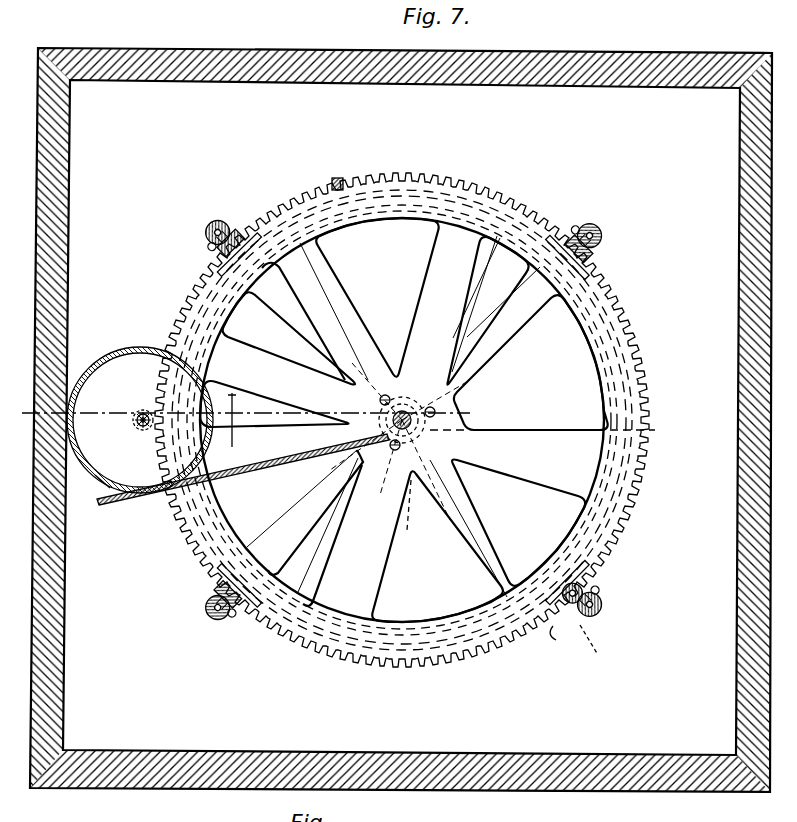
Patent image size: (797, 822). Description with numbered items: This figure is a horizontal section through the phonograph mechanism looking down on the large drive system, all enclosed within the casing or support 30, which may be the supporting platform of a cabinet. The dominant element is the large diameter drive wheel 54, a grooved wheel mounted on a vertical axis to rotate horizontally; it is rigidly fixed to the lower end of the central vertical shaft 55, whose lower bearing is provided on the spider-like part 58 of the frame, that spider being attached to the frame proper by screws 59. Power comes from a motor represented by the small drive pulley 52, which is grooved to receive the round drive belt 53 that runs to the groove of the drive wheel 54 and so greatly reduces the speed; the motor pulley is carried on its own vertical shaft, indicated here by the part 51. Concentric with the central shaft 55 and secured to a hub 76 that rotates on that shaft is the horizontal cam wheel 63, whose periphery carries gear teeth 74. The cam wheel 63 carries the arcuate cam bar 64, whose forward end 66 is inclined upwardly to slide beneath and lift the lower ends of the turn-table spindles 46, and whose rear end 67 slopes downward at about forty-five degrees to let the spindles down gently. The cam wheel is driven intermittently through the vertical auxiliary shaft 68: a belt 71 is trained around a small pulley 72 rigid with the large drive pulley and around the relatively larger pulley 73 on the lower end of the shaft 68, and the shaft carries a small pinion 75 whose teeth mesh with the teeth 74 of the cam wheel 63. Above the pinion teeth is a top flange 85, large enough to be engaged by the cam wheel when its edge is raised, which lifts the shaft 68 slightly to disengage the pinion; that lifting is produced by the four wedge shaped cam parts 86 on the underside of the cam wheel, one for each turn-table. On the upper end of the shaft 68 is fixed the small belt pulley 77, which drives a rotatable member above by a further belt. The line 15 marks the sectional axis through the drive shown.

The casing or support 30 is at (637, 60).
The large diameter drive wheel 54 is at (345, 298).
The spider-like part 58 is at (290, 312).
The horizontal wheel 63 is at (642, 350).
The cam bar 64 is at (480, 176).
The gear teeth 74 is at (650, 432).
The rear end 67 is at (338, 179).
The hub 76 is at (400, 386).
The central vertical shaft 55 is at (438, 414).
The small pulley 72 is at (415, 515).
The shaft 15 is at (241, 420).
The small belt pulley 77 is at (116, 352).
The small pinion 75 is at (134, 415).
The top flange 85 is at (134, 426).
The relatively larger pulley 73 is at (110, 489).
The vertical auxiliary shaft 68 is at (141, 430).
The belt 71 is at (268, 472).
The wedge shaped cam parts 86 is at (200, 284).
The forward end 66 is at (568, 239).
The screws 59 is at (204, 241).
The shaft or spindle 46 is at (240, 240).
The small drive pulley 52 is at (596, 613).
The round drive belt 53 is at (567, 642).
The pin 51 is at (601, 646).